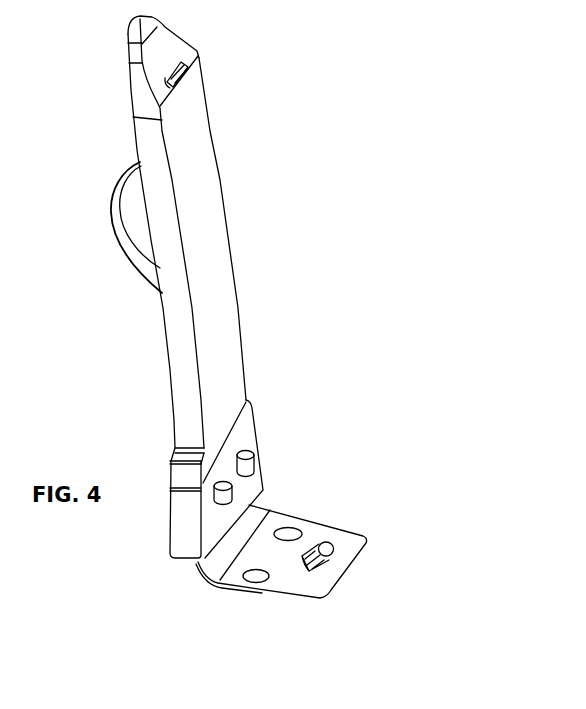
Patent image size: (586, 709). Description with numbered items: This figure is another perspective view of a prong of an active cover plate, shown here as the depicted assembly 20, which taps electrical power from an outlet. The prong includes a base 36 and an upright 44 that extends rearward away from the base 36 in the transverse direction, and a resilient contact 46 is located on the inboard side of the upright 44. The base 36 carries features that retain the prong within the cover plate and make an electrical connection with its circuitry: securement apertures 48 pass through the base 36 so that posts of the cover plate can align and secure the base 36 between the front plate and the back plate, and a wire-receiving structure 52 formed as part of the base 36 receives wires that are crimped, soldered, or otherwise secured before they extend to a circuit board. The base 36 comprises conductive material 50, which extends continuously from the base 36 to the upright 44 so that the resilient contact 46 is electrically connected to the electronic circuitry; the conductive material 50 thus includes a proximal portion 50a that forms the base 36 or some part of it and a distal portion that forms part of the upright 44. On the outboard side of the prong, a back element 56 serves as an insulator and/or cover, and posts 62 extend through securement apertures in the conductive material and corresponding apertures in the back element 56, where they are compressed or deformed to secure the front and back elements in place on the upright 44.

The assembly 20 is at (263, 52).
The base 36 is at (0, 52).
The upright 44 is at (272, 255).
The resilient contact 46 is at (118, 240).
The securement apertures 48 is at (254, 569).
The conductive material 50 is at (310, 582).
The proximal portion 50a is at (281, 551).
The wire-receiving structure 52 is at (328, 543).
The back element 56 is at (222, 341).
The posts 62 is at (222, 485).